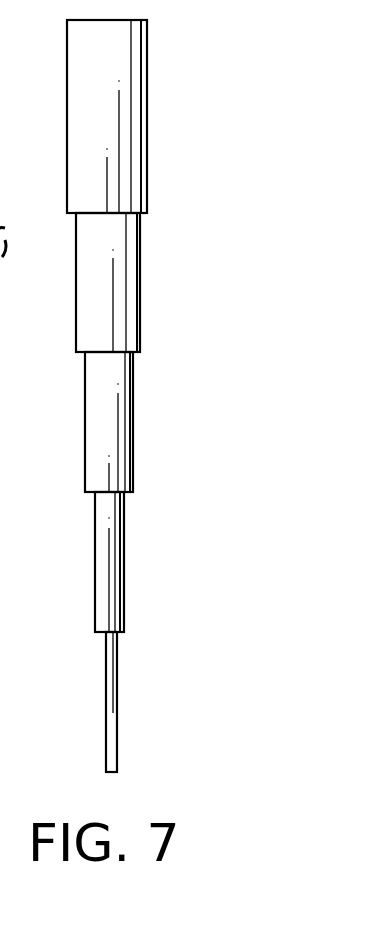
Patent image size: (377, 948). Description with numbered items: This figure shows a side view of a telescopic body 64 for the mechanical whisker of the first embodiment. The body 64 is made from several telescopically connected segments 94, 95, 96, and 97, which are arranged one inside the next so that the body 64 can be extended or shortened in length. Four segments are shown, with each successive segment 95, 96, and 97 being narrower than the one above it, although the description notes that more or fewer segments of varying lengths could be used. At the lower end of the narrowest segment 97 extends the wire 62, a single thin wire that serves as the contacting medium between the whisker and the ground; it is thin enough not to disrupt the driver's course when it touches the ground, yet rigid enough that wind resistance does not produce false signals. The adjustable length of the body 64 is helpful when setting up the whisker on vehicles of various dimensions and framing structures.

The telescopically connected segment 94 is at (128, 134).
The telescopically connected segment 95 is at (119, 293).
The telescopically connected segment 96 is at (116, 427).
The telescopically connected segment 97 is at (107, 580).
The wire 62 is at (105, 688).
The body 64 is at (62, 498).